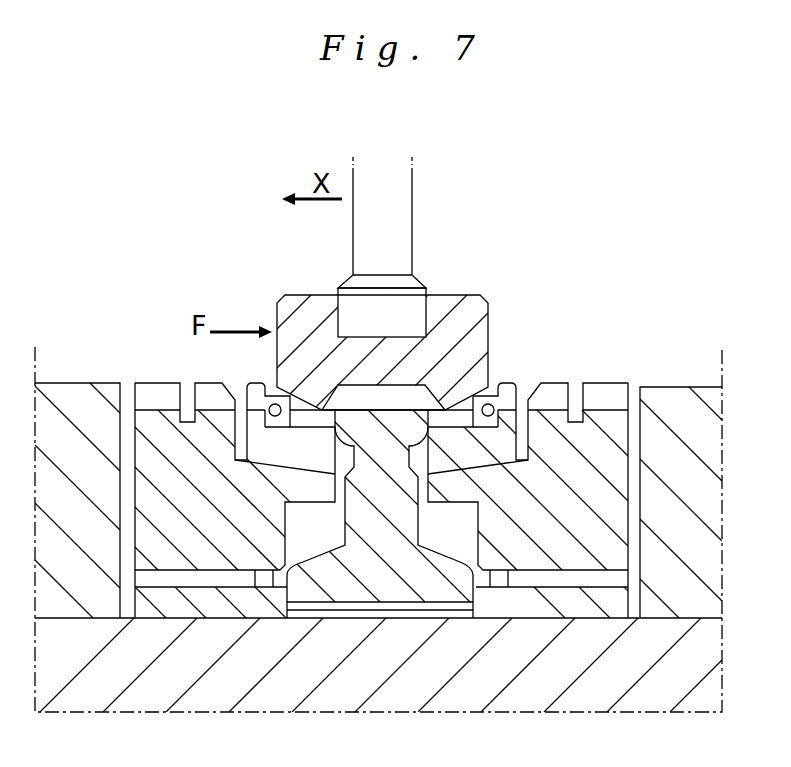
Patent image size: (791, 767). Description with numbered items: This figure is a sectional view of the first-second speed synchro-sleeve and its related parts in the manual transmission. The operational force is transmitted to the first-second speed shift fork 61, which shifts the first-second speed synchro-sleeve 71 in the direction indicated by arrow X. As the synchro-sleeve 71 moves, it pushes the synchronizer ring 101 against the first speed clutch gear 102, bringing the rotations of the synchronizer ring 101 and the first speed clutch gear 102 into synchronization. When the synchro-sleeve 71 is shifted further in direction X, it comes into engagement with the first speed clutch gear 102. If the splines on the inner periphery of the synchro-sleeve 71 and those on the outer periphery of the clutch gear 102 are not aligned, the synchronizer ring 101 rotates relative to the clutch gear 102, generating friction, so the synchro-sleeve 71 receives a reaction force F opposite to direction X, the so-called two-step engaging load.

The 1st-2nd speed shift fork 61 is at (399, 221).
The 1st-2nd speed synchro-sleeve 71 is at (465, 326).
The synchronizer ring 101 is at (256, 393).
The 1st speed clutch gear 102 is at (207, 393).